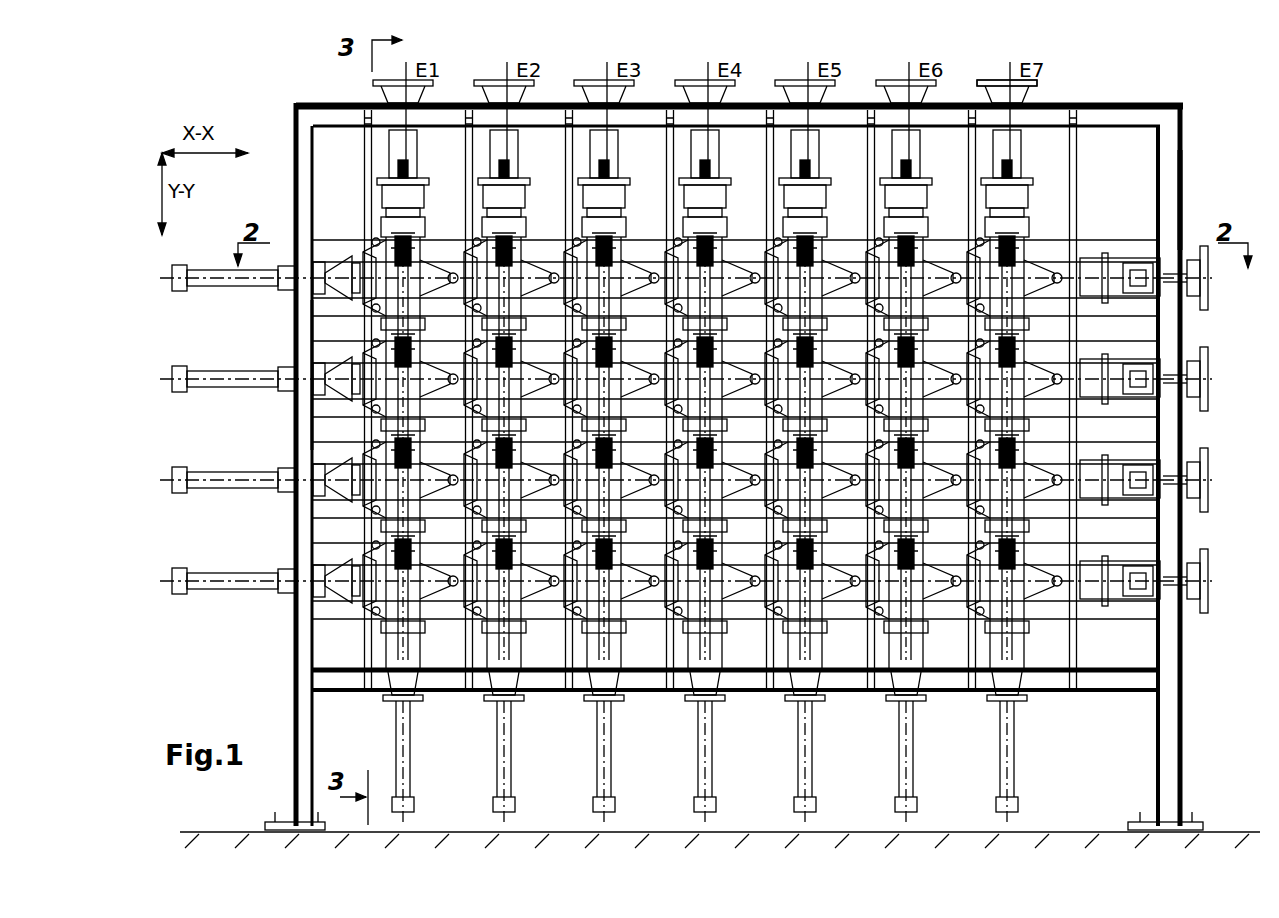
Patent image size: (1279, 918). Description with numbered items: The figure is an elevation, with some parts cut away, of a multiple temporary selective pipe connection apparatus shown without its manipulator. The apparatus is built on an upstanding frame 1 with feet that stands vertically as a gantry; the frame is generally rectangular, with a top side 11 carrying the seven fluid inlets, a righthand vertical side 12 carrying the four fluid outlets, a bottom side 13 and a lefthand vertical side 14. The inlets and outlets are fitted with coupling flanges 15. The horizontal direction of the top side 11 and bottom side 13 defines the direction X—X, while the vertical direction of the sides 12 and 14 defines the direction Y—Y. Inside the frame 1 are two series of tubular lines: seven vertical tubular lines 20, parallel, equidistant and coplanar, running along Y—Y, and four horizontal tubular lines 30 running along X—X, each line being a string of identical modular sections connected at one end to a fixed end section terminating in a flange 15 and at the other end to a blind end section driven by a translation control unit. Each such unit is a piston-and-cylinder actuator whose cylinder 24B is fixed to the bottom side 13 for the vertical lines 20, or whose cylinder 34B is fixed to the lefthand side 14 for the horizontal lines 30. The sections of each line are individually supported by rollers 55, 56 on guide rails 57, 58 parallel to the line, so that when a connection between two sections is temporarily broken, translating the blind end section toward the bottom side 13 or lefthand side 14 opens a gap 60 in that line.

The frame 1 is at (294, 107).
The top side 11 is at (1128, 104).
The righthand vertical side 12 is at (1185, 192).
The bottom side 13 is at (1078, 693).
The lefthand vertical side 14 is at (298, 405).
The coupling flange 15 is at (1037, 82).
The vertical tubular line 20 is at (432, 207).
The cylinder 24B is at (992, 756).
The horizontal tubular line 30 is at (1045, 552).
The cylinder 34B is at (242, 566).
The roller 55 is at (462, 276).
The roller 56 is at (940, 262).
The guide rail 57 is at (462, 322).
The guide rail 58 is at (970, 282).
The gap 60 is at (511, 382).